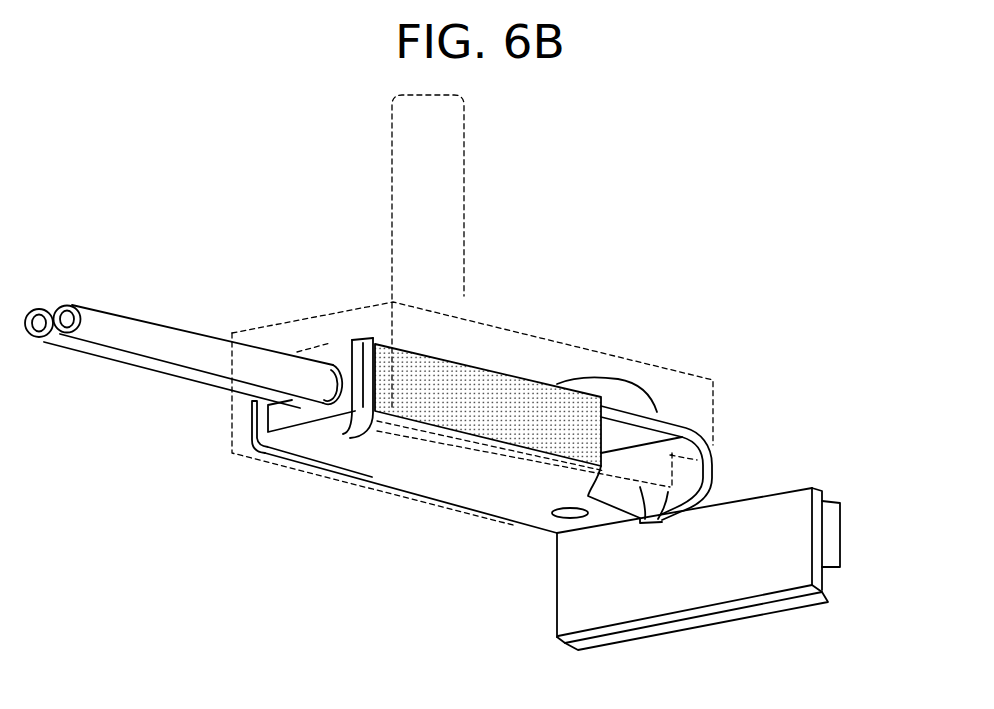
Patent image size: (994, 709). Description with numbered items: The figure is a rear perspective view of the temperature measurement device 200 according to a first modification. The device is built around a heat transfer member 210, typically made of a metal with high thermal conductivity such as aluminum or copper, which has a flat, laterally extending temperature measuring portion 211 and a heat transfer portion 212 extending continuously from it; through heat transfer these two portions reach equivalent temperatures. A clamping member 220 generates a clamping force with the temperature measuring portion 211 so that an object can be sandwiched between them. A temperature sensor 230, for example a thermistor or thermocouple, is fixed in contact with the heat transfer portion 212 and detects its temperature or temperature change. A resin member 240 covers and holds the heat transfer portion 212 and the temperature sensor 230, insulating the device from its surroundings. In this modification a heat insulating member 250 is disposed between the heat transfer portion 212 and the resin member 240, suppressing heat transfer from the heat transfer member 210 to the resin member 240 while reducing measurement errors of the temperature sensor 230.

The temperature measurement device 200 is at (405, 650).
The heat transfer member 210 is at (750, 497).
The temperature measuring portion 211 is at (577, 607).
The heat transfer portion 212 is at (371, 469).
The clamping member 220 is at (840, 535).
The temperature sensor 230 is at (338, 358).
The resin member 240 is at (548, 342).
The heat insulating member 250 is at (460, 367).